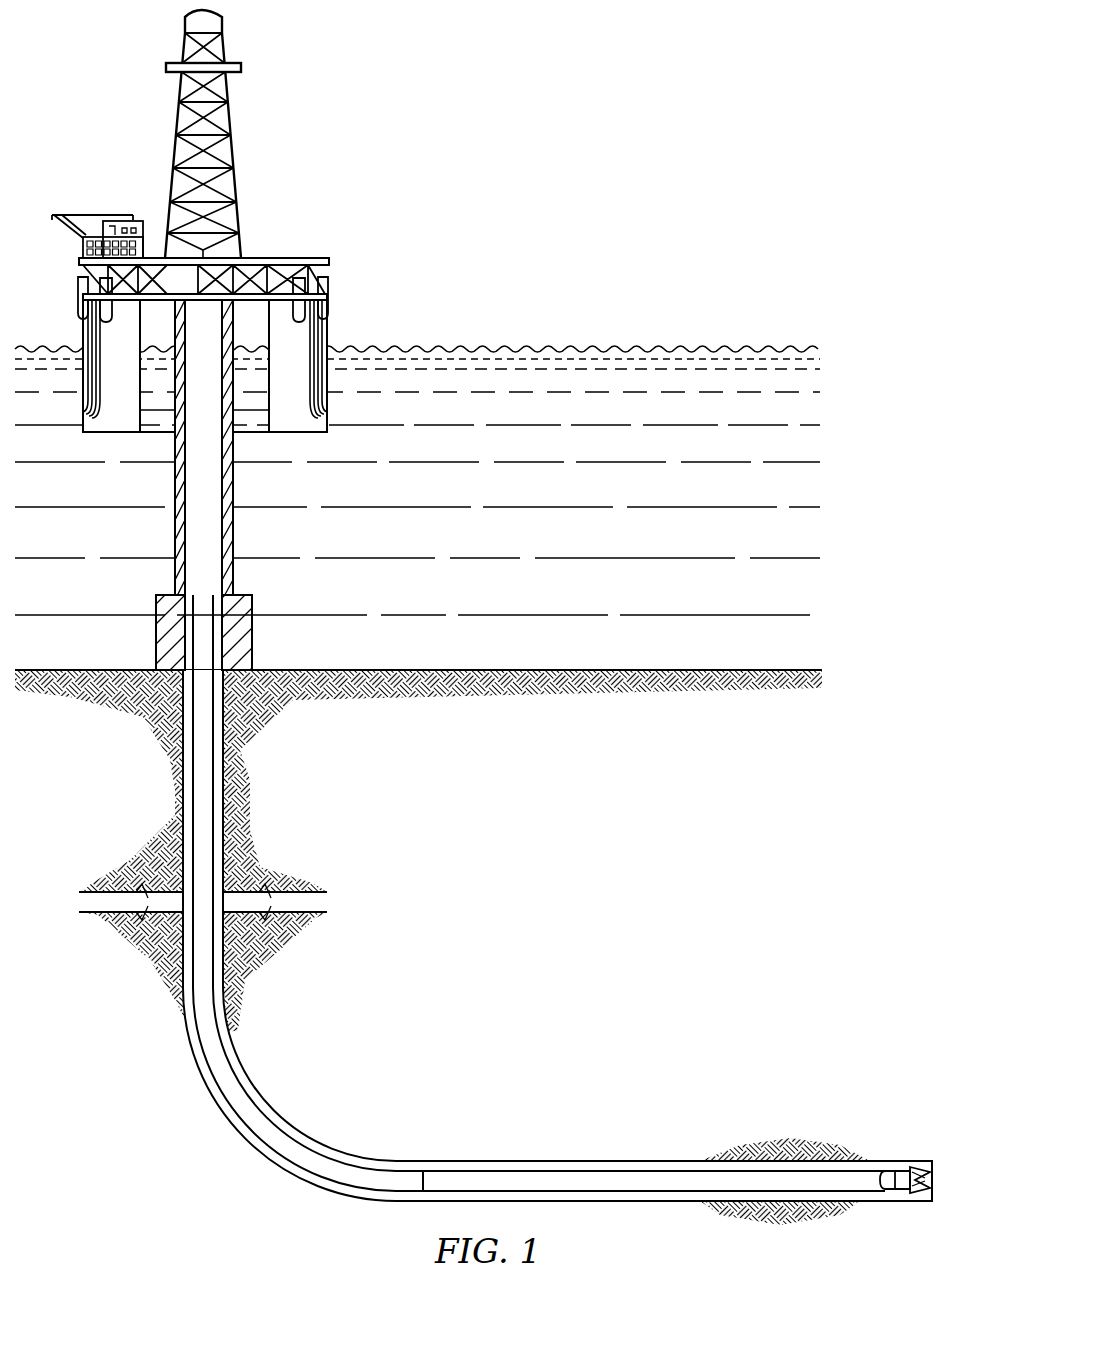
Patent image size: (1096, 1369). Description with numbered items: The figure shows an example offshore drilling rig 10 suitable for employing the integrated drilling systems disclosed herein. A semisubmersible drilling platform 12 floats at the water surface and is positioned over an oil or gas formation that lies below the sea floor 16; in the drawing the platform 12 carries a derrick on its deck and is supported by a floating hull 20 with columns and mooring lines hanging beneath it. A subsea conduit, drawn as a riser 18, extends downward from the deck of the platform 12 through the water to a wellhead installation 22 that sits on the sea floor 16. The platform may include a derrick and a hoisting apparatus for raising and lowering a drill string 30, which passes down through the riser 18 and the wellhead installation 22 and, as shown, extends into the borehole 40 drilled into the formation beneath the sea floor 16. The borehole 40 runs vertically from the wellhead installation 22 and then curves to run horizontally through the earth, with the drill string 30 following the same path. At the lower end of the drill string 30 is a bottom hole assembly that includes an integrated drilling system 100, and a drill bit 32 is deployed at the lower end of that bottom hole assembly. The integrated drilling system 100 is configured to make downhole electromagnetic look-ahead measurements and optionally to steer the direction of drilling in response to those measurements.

The drilling rig 10 is at (330, 129).
The semisubmersible drilling platform 12 is at (312, 258).
The platform hull 20 is at (332, 296).
The drill string 30 is at (207, 448).
The riser 18 is at (236, 530).
The wellhead installation 22 is at (248, 596).
The sea floor 16 is at (483, 670).
The borehole 40 is at (184, 796).
The integrated drilling system 100 is at (674, 1180).
The drill bit 32 is at (895, 1170).